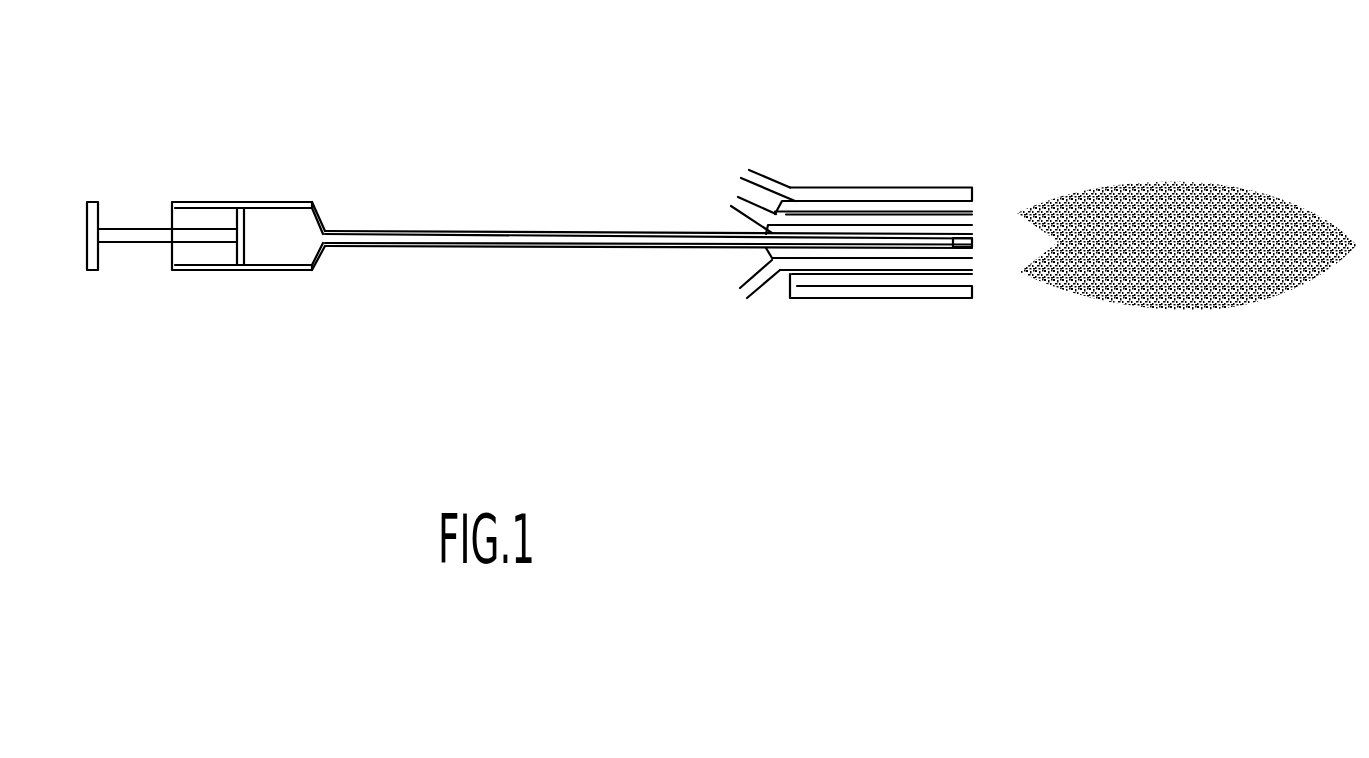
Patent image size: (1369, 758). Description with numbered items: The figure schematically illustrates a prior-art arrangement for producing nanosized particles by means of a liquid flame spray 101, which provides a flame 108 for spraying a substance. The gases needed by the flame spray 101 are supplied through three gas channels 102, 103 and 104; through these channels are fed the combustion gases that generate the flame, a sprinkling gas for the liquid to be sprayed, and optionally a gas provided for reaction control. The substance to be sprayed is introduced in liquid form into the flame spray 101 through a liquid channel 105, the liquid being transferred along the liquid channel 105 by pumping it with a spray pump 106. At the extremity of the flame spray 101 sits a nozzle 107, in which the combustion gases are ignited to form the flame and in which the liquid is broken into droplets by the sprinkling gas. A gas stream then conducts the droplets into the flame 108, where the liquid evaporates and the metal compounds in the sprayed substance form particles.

The liquid flame spray 101 is at (953, 187).
The gas channel 102 is at (749, 170).
The gas channel 103 is at (743, 290).
The gas channel 104 is at (733, 203).
The liquid channel 105 is at (578, 248).
The spray pump 106 is at (266, 260).
The nozzle 107 is at (972, 247).
The flame 108 is at (1190, 187).